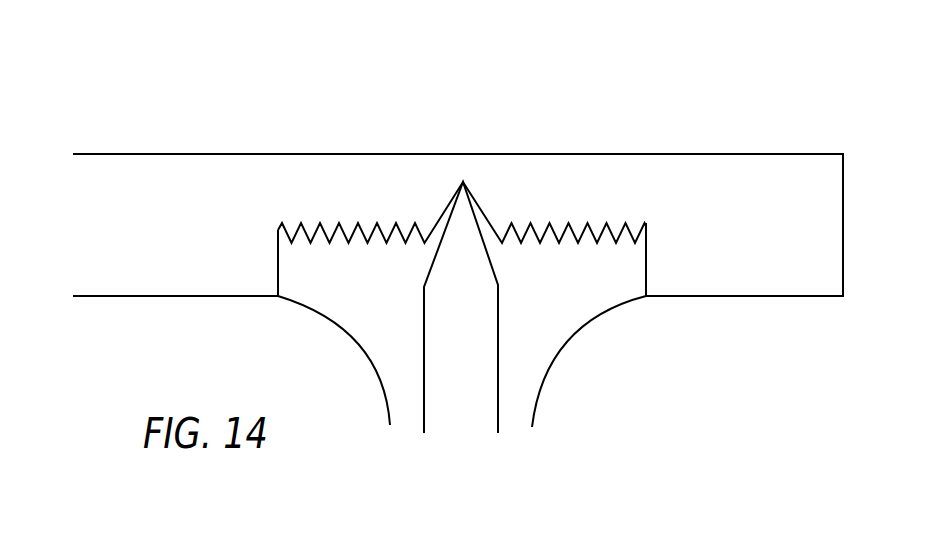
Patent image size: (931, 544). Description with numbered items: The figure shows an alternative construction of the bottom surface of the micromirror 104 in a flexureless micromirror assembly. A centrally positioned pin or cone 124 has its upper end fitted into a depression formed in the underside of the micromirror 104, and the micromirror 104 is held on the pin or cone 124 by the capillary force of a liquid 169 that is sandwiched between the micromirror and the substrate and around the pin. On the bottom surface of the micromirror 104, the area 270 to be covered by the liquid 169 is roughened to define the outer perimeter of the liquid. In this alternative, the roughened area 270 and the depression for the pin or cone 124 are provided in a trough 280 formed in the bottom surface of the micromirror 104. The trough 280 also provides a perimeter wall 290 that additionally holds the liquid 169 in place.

The micromirror 104 is at (795, 185).
The pin or cone 124 is at (463, 382).
The liquid 169 is at (548, 325).
The roughened area 270 is at (577, 232).
The trough 280 is at (646, 267).
The perimeter wall 290 is at (278, 266).